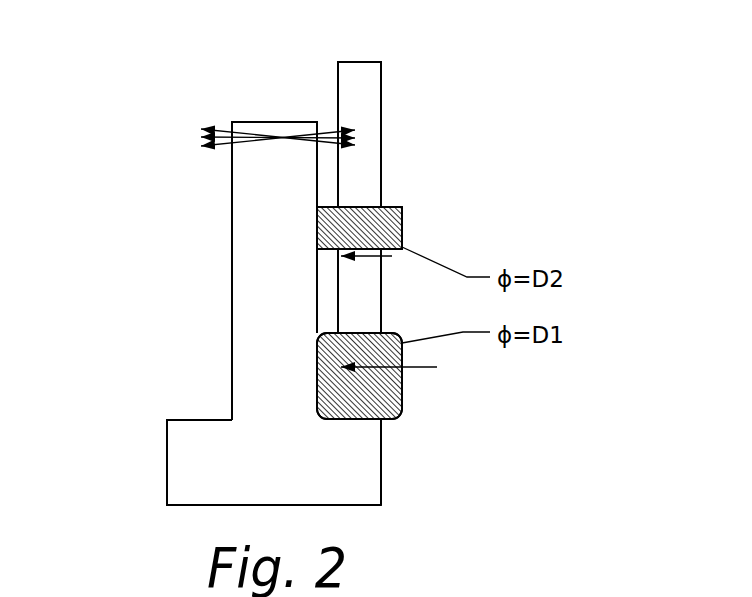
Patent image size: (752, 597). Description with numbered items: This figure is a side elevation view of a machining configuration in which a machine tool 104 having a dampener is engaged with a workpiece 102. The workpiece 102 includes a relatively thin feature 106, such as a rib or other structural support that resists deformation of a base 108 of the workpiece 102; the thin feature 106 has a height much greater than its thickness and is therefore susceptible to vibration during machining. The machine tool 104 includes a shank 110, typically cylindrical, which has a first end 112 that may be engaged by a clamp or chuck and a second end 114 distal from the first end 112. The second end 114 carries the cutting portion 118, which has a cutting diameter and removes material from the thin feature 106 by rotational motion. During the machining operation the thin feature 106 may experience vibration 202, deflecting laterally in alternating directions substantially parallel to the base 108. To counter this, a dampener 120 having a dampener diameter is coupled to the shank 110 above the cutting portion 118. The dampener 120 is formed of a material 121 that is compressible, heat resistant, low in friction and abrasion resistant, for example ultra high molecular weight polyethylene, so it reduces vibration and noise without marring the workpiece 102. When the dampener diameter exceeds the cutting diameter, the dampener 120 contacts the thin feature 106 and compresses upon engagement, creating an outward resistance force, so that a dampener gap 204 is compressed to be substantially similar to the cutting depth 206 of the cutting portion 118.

The workpiece 102 is at (182, 172).
The machine tool 104 is at (427, 107).
The thin feature 106 is at (257, 190).
The base 108 is at (223, 453).
The shank 110 is at (381, 147).
The first end 112 is at (360, 60).
The second end 114 is at (363, 422).
The cutting portion 118 is at (402, 377).
The dampener 120 is at (402, 212).
The material 121 is at (403, 228).
The vibration 202 is at (278, 136).
The dampener gap 204 is at (314, 256).
The cutting depth 206 is at (314, 367).